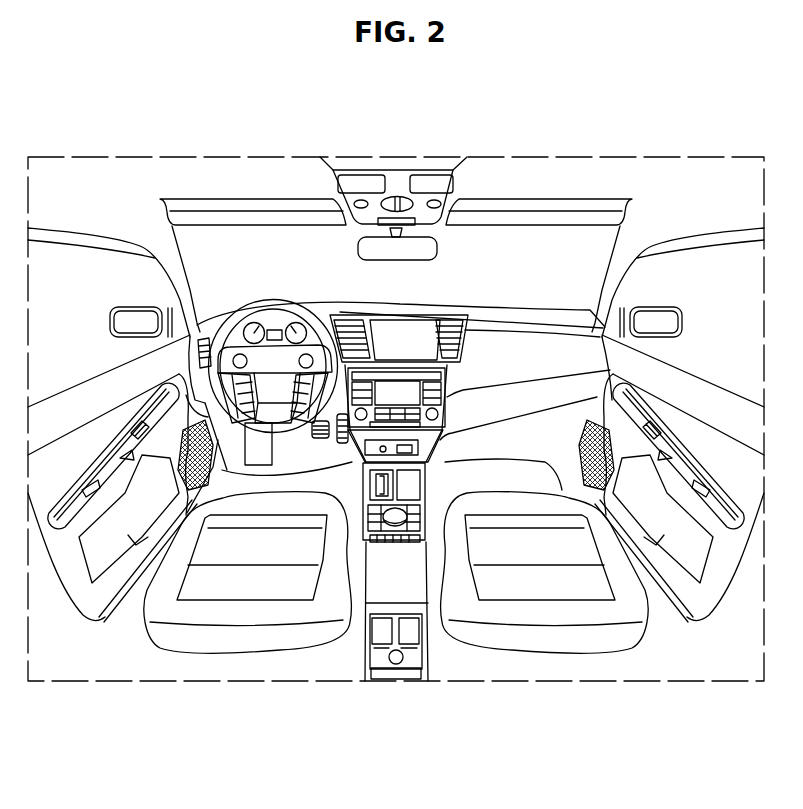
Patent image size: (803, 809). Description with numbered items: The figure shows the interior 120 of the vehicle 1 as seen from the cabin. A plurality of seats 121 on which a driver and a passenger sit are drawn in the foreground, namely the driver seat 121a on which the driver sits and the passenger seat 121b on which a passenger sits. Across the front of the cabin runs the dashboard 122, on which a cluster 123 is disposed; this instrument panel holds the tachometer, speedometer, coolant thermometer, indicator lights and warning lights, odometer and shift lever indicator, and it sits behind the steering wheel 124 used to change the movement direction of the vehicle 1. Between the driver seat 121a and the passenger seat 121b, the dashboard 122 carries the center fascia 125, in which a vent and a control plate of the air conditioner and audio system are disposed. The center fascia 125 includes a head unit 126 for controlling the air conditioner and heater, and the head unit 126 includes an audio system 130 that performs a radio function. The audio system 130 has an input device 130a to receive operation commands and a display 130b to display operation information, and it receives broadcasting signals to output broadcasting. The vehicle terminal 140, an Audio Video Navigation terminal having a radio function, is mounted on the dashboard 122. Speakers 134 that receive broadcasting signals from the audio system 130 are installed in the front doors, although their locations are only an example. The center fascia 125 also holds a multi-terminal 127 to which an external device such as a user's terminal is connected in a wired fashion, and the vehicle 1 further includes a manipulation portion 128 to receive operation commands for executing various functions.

The vehicle 1 is at (192, 109).
The interior 120 is at (551, 190).
The seats 121 is at (396, 635).
The driver seat 121a is at (243, 643).
The passenger seat 121b is at (545, 610).
The dashboard 122 is at (549, 337).
The cluster 123 is at (255, 315).
The steering wheel 124 is at (283, 303).
The center fascia 125 is at (442, 428).
The head unit 126 is at (452, 380).
The multi-terminal 127 is at (412, 452).
The manipulation portion 128 is at (417, 513).
The audio system 130 is at (302, 468).
The input device 130a is at (318, 440).
The display 130b is at (331, 451).
The speakers 134 is at (208, 468).
The vehicle terminal 140 is at (423, 313).